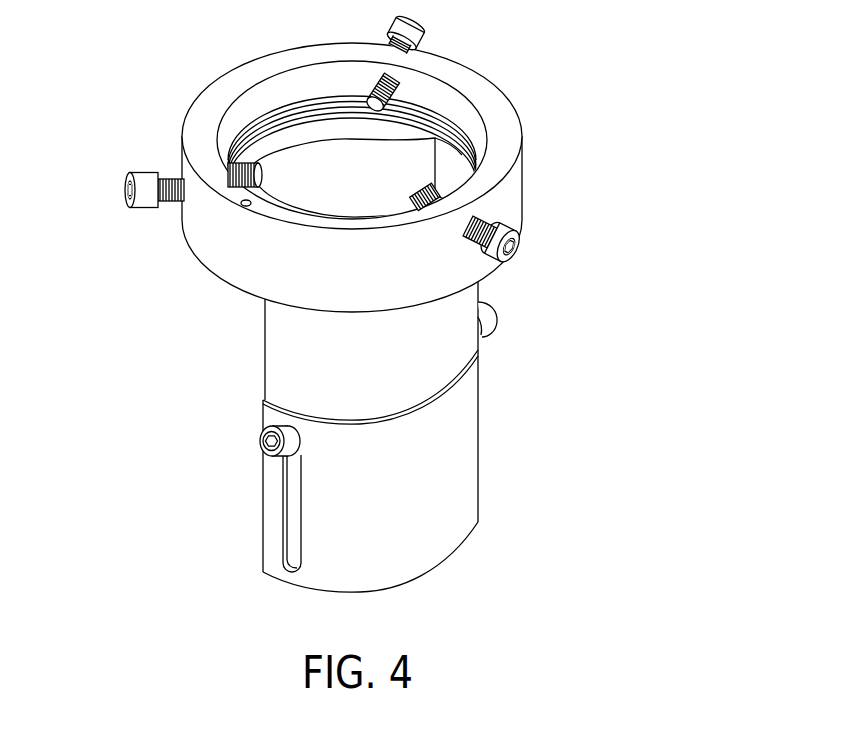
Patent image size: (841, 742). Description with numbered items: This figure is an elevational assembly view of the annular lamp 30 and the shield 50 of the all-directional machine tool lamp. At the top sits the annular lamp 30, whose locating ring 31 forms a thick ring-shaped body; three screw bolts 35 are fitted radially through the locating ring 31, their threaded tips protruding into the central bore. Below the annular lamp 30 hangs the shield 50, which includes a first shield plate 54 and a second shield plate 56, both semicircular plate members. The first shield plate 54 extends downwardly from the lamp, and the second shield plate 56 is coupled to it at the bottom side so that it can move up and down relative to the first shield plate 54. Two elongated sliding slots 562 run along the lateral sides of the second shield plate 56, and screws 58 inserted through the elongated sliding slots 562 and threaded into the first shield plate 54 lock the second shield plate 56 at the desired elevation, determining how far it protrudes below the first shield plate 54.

The annular lamp 30 is at (342, 162).
The locating ring 31 is at (524, 190).
The screw bolts 35 is at (142, 172).
The shield 50 is at (377, 437).
The first shield plate 54 is at (265, 331).
The second shield plate 56 is at (263, 529).
The elongated sliding slots 562 is at (283, 486).
The screws 58 is at (263, 425).